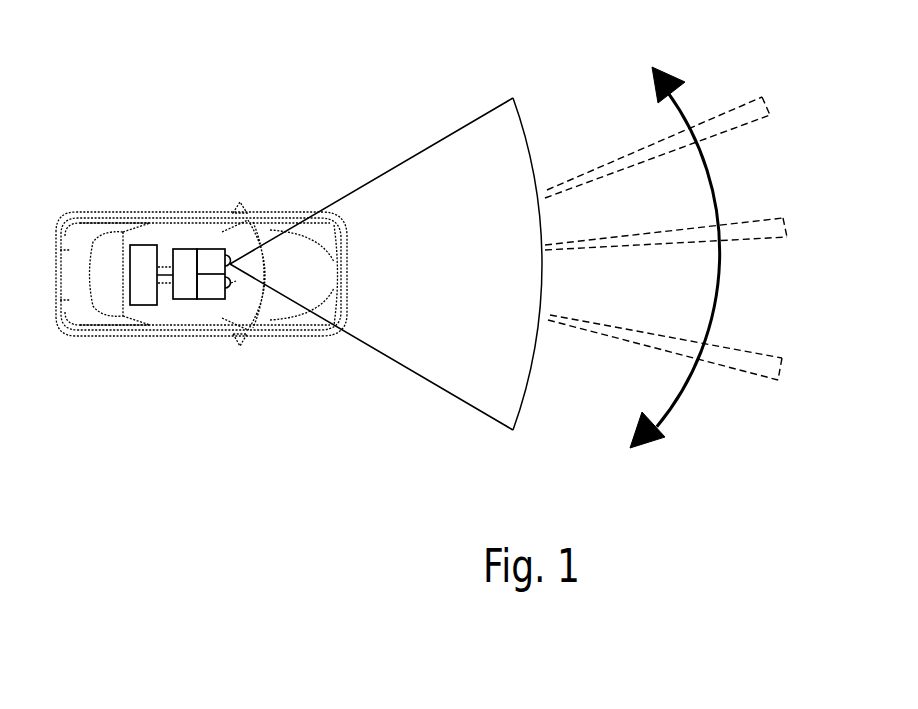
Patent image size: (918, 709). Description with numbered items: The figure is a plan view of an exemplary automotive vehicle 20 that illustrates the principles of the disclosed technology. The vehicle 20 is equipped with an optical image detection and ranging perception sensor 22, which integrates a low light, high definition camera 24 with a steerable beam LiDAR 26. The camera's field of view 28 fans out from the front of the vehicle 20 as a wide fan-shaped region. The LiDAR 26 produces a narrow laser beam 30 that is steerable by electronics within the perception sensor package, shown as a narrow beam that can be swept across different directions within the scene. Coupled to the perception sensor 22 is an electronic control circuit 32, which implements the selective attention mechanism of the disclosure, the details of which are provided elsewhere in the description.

The automotive vehicle 20 is at (110, 338).
The perception sensor 22 is at (187, 253).
The camera 24 is at (217, 253).
The steerable beam LiDAR 26 is at (208, 299).
The field of view 28 is at (450, 268).
The laser beam 30 is at (737, 223).
The electronic control circuit 32 is at (135, 247).